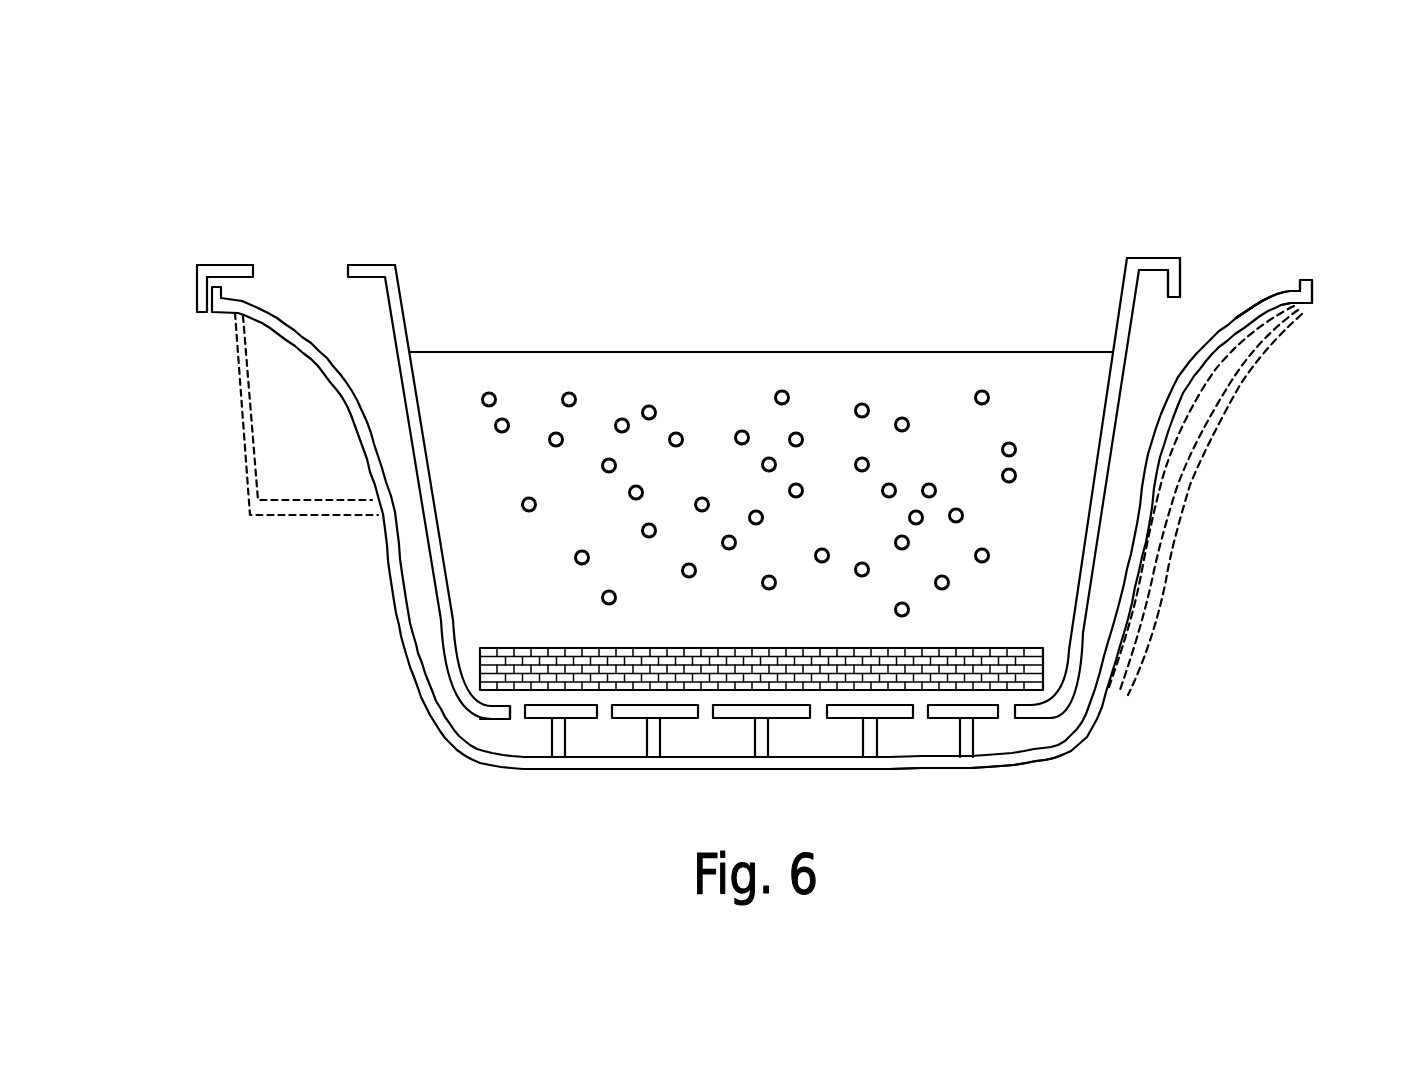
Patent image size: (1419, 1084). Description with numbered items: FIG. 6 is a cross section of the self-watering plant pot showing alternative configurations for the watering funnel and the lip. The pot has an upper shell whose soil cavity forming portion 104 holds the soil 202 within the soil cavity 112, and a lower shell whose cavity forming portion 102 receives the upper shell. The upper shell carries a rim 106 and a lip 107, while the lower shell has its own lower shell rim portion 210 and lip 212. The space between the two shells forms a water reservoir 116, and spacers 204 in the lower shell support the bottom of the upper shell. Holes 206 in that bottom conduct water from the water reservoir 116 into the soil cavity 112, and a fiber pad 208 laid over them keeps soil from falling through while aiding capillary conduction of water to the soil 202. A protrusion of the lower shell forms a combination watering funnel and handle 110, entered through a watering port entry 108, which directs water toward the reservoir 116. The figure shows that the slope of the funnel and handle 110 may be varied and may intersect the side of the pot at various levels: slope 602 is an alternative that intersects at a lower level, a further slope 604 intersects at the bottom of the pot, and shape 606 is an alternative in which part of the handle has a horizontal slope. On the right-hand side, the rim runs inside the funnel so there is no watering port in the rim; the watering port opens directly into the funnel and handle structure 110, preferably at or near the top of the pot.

The cavity forming portion 102 is at (400, 648).
The soil cavity forming portion 104 is at (410, 326).
The rim 106 is at (362, 265).
The lip 107 is at (197, 303).
The watering port entry 108 is at (1246, 236).
The combination watering funnel and handle 110 is at (1240, 318).
The soil cavity 112 is at (798, 265).
The water reservoir 116 is at (1057, 727).
The soil 202 is at (910, 388).
The spacers 204 is at (977, 728).
The holes 206 is at (513, 718).
The fiber pad 208 is at (530, 682).
The lower shell rim portion 210 is at (1311, 303).
The lip 212 is at (1312, 284).
The slope 602 is at (1203, 415).
The slope 604 is at (1208, 468).
The shape 606 is at (248, 475).